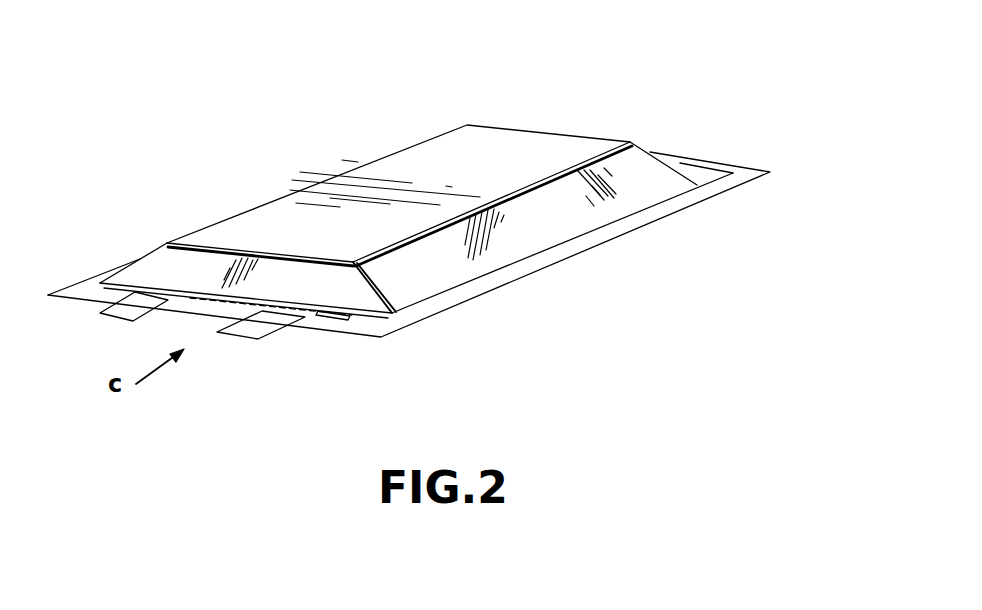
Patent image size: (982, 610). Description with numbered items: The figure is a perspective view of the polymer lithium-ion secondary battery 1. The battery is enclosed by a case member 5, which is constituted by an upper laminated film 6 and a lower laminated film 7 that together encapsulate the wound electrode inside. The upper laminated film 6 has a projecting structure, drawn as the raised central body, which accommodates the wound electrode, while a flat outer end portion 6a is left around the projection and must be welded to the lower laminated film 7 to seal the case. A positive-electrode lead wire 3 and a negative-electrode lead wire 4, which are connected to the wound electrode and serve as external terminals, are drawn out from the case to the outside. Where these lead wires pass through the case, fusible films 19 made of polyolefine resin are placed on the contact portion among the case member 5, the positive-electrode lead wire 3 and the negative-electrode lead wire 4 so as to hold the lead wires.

The polymer lithium-ion secondary battery 1 is at (706, 54).
The positive-electrode lead wire 3 is at (107, 317).
The negative-electrode lead wire 4 is at (247, 335).
The case member 5 is at (806, 131).
The upper laminated film 6 is at (664, 153).
The outer end portion 6a is at (526, 253).
The lower laminated film 7 is at (716, 188).
The fusible film 19 is at (330, 318).